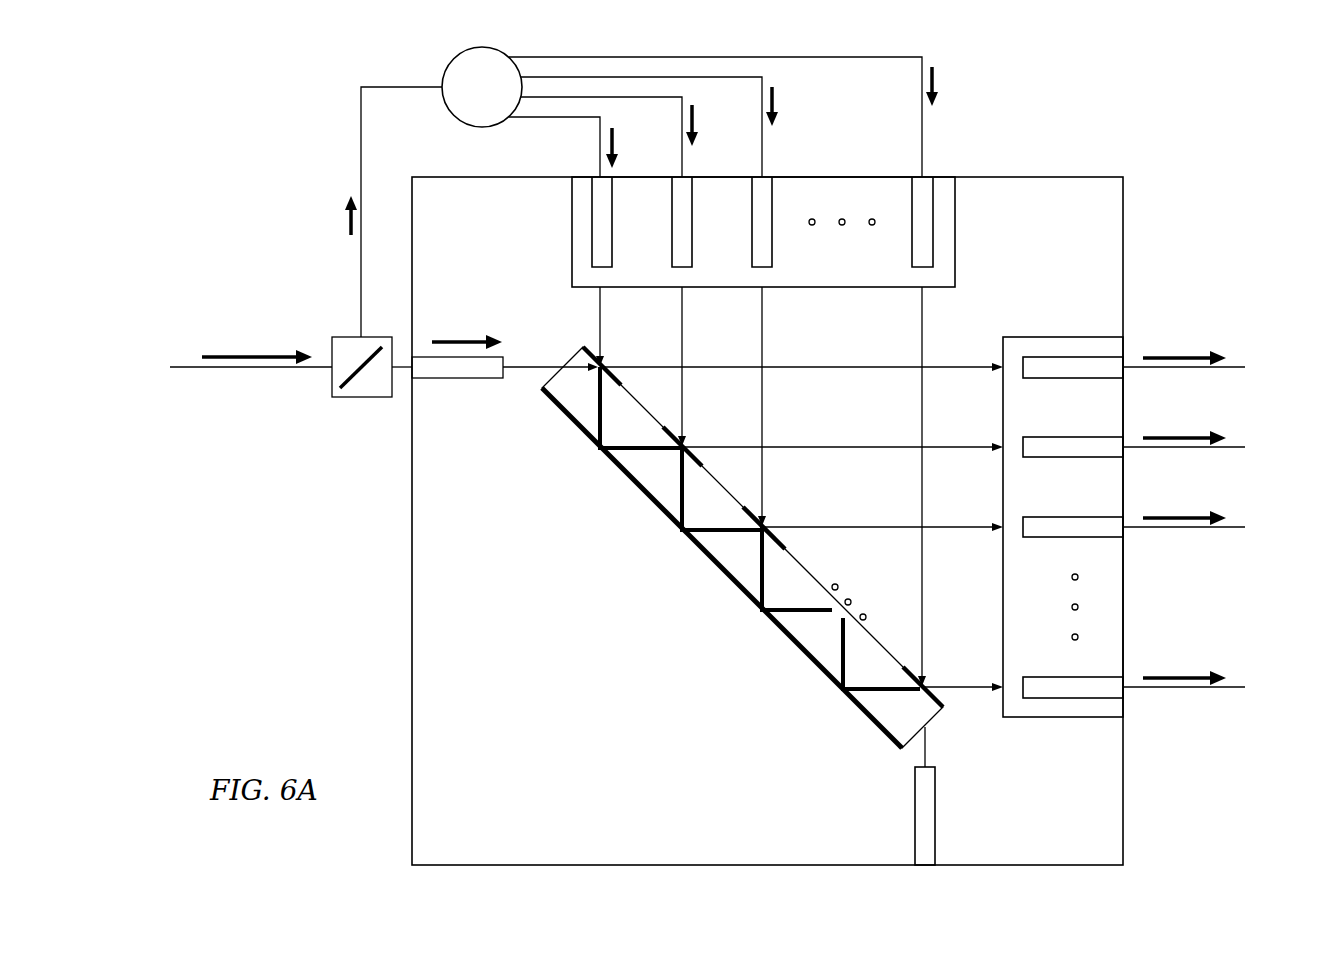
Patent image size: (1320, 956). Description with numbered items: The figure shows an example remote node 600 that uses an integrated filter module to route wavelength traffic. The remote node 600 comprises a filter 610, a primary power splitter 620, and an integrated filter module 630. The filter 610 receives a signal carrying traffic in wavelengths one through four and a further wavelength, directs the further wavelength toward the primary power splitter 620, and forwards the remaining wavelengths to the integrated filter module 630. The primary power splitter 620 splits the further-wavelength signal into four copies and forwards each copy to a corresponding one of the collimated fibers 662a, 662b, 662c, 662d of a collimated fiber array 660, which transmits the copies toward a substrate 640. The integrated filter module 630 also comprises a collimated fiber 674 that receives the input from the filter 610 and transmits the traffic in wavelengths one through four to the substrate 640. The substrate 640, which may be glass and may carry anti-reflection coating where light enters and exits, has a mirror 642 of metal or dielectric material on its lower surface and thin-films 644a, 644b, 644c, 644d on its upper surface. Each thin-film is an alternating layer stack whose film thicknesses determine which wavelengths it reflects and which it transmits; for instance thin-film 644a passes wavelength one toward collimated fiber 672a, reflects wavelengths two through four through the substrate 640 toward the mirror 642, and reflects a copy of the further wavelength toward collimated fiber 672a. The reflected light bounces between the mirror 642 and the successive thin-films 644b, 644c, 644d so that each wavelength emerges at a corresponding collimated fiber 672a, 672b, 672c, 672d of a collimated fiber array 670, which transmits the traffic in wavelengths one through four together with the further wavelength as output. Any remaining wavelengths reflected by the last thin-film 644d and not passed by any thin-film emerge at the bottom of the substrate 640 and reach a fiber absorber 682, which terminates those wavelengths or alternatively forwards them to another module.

The remote node 600 is at (1237, 212).
The filter 610 is at (352, 400).
The primary power splitter 620 is at (440, 74).
The integrated filter module 630 is at (404, 638).
The substrate 640 is at (784, 522).
The mirror 642 is at (718, 572).
The thin-film 644a is at (591, 351).
The thin-film 644b is at (700, 462).
The thin-film 644c is at (780, 540).
The thin-film 644d is at (943, 698).
The collimated fiber array 660 is at (955, 232).
The collimated fiber 662a is at (612, 226).
The collimated fiber 662b is at (692, 226).
The collimated fiber 662c is at (773, 247).
The collimated fiber 662d is at (912, 207).
The collimated fiber array 670 is at (1063, 335).
The collimated fiber 672a is at (1073, 380).
The collimated fiber 672b is at (1073, 459).
The collimated fiber 672c is at (1050, 540).
The collimated fiber 672d is at (1050, 675).
The collimated fiber 674 is at (458, 380).
The fiber absorber 682 is at (935, 815).